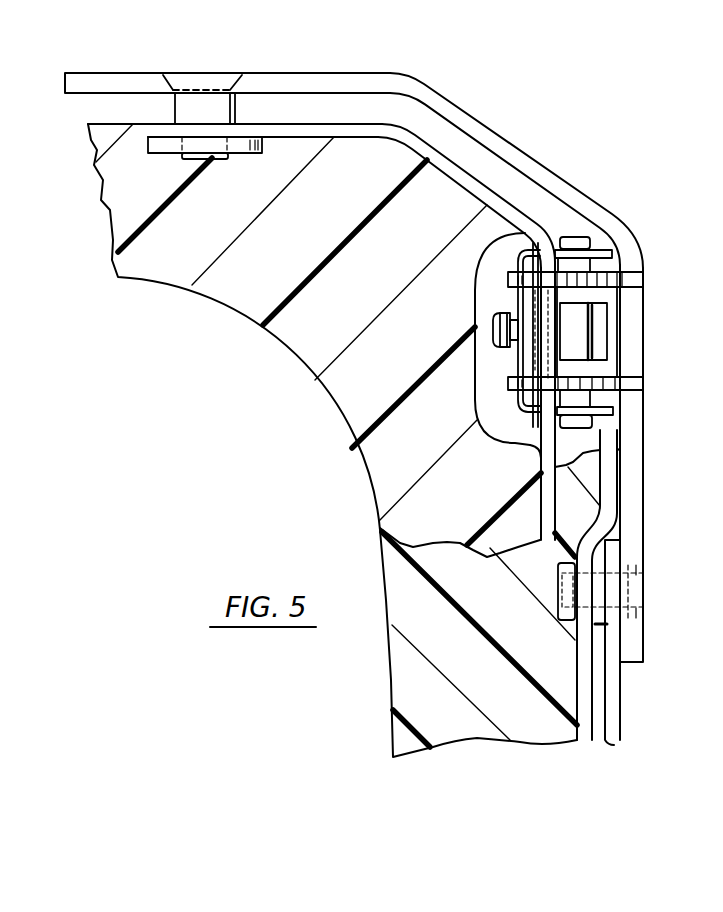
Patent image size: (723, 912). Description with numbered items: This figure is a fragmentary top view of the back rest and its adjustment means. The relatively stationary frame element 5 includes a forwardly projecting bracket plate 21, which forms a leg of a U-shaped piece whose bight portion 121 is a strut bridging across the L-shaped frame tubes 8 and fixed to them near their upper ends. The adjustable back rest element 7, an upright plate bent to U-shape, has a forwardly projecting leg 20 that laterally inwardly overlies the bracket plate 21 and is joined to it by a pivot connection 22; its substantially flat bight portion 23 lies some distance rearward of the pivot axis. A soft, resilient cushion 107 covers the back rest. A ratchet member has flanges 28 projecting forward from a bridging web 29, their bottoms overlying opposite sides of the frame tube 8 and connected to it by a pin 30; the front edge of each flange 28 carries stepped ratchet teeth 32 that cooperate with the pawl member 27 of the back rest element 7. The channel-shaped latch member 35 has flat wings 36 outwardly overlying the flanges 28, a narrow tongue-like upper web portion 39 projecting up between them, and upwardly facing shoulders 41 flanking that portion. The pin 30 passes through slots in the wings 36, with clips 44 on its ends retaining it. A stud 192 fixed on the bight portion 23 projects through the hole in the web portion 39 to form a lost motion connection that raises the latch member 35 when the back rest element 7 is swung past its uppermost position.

The bracket plate 21 is at (307, 73).
The frame element 5 is at (541, 158).
The bight portion 121 is at (634, 528).
The leg 20 is at (303, 129).
The back rest element 7 is at (452, 162).
The bight portion 23 is at (550, 462).
The pivot connection 22 is at (207, 158).
The cushion 107 is at (307, 350).
The shoulders 41 is at (522, 266).
The latch member 35 is at (516, 423).
The upper portion of the web 39 is at (527, 363).
The stud 192 is at (497, 322).
The flanges 28 is at (644, 273).
The pawl member 27 is at (652, 280).
The bridging web 29 is at (630, 312).
The L-shaped tube 8 is at (603, 348).
The clips 44 is at (592, 246).
The wings 36 is at (612, 255).
The ratchet teeth 32 is at (605, 388).
The pin 30 is at (586, 428).